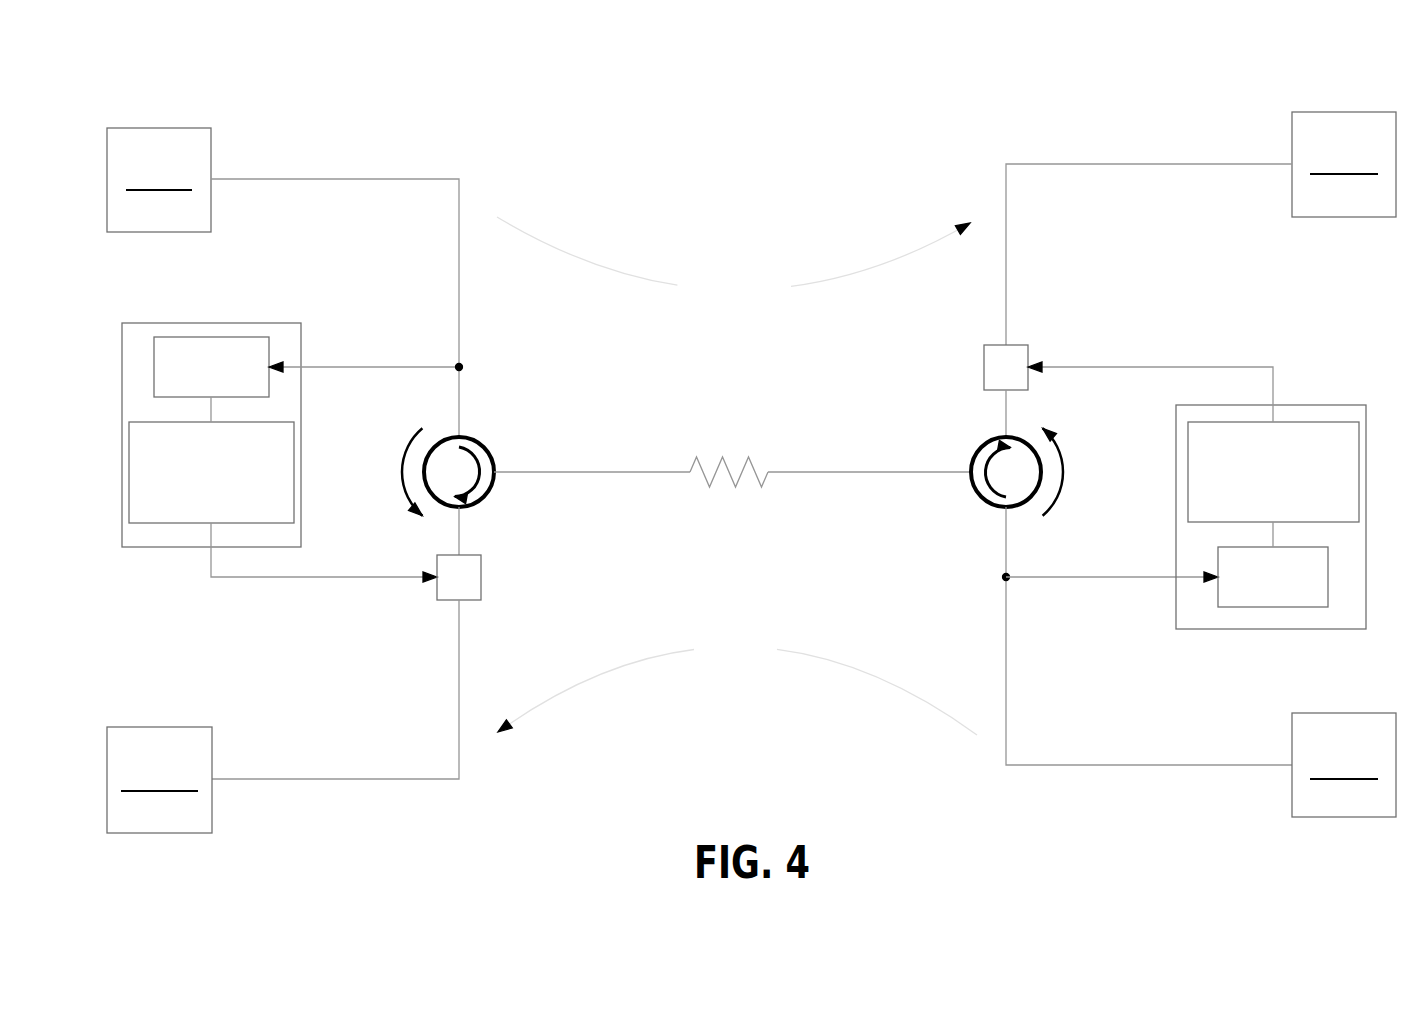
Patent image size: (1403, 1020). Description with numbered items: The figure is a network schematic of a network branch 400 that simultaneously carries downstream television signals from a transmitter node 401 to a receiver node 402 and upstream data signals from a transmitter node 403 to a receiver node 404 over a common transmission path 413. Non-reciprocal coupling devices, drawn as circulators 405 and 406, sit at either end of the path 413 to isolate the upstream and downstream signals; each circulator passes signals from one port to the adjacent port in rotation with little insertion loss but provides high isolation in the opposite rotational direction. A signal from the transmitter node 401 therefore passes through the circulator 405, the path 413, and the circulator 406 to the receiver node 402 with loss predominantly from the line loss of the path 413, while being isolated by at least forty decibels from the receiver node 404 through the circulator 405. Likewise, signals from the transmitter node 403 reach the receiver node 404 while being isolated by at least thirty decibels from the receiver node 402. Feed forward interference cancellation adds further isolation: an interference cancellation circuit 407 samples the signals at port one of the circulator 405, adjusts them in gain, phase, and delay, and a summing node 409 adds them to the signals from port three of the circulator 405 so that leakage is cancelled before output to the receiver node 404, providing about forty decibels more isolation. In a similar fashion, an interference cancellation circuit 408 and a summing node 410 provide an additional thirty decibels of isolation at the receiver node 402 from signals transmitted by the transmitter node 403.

The network branch 400 is at (754, 66).
The transmitter node 401 is at (184, 157).
The receiver node 402 is at (1326, 140).
The transmitter node 403 is at (1327, 743).
The receiver node 404 is at (184, 756).
The circulator 405 is at (433, 471).
The circulator 406 is at (1028, 471).
The interference cancellation circuit 407 is at (204, 411).
The interference cancellation circuit 408 is at (1280, 499).
The summing node 409 is at (499, 570).
The summing node 410 is at (962, 363).
The transmission path 413 is at (732, 486).